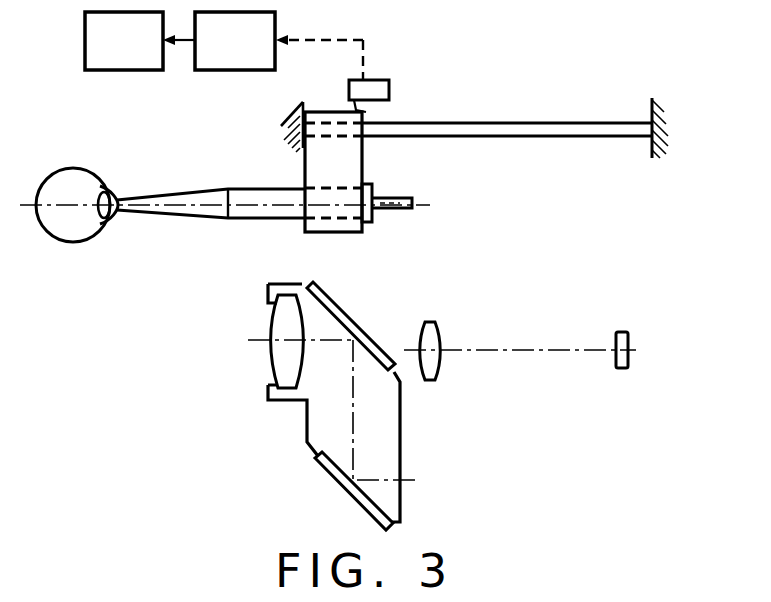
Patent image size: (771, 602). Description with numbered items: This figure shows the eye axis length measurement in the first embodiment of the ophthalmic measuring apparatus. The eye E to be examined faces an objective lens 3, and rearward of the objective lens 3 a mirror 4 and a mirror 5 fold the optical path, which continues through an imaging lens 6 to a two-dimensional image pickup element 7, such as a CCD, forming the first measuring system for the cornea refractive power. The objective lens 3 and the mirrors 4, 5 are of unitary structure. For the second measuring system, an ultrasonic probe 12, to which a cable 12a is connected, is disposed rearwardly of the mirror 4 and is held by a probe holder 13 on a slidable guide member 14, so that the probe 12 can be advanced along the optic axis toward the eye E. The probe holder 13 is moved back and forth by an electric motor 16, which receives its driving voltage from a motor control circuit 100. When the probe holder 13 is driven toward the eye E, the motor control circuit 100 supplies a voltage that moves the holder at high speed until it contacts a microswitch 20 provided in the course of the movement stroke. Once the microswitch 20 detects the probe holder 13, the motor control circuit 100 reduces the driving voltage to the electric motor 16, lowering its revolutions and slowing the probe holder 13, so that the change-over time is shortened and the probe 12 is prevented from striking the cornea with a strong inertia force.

The electric motor 16 is at (85, 62).
The motor control circuit 100 is at (234, 70).
The microswitch 20 is at (390, 82).
The eye to be examined E is at (108, 188).
The ultrasonic probe 12 is at (263, 190).
The probe holder 13 is at (345, 172).
The slidable guide member 14 is at (537, 128).
The cable 12a is at (414, 210).
The objective lens 3 is at (272, 318).
The mirror 4 is at (350, 324).
The mirror 5 is at (328, 470).
The imaging lens 6 is at (438, 382).
The two-dimensional image pickup element 7 is at (622, 370).